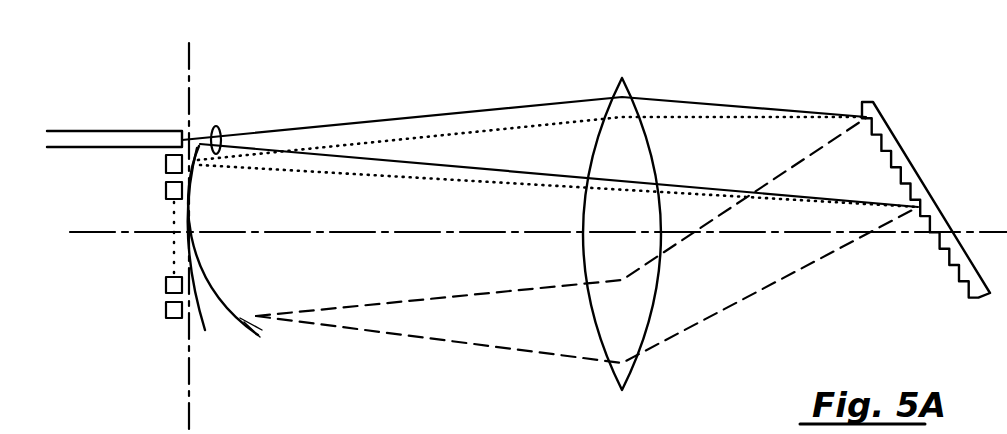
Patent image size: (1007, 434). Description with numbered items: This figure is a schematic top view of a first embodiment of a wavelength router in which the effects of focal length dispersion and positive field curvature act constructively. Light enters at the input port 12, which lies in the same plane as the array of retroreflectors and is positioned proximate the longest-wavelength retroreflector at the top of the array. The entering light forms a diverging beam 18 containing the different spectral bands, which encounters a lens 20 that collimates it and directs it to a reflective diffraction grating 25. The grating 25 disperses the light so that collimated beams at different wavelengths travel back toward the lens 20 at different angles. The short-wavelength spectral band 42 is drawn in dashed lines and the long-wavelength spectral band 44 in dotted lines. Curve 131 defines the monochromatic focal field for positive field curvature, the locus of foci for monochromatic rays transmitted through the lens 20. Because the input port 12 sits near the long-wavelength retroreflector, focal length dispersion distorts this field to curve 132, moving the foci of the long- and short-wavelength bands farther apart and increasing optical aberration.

The input port 12 is at (98, 130).
The diverging beam 18 is at (219, 128).
The lens 20 is at (626, 82).
The reflective diffraction grating 25 is at (900, 140).
The monochromatic focal field curve 131 is at (209, 330).
The distorted focal field curve 132 is at (258, 337).
The short-wavelength spectral band 42 is at (750, 298).
The long-wavelength spectral band 44 is at (735, 110).